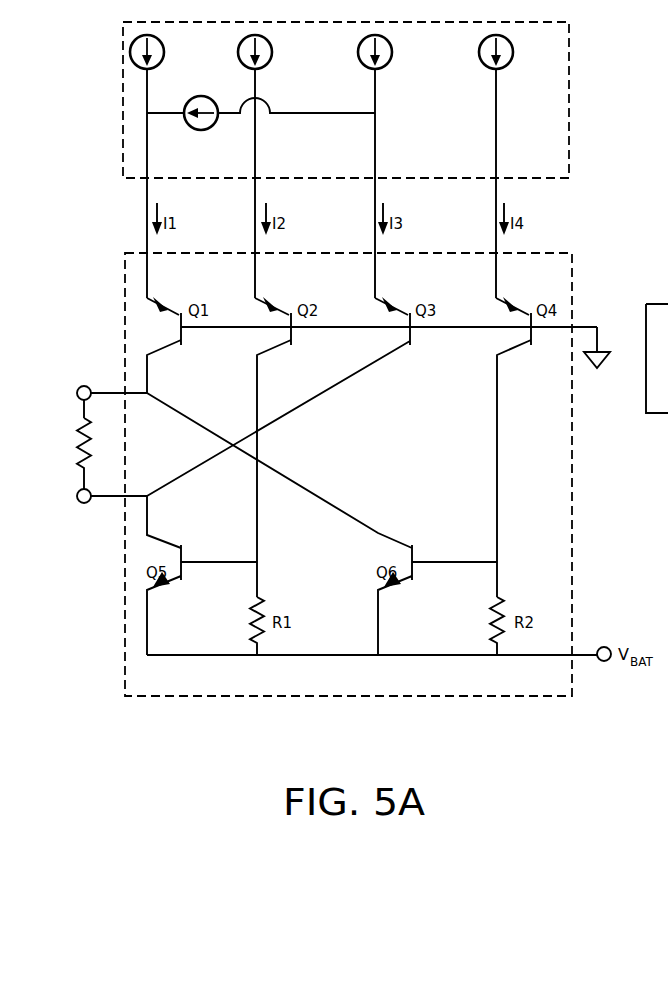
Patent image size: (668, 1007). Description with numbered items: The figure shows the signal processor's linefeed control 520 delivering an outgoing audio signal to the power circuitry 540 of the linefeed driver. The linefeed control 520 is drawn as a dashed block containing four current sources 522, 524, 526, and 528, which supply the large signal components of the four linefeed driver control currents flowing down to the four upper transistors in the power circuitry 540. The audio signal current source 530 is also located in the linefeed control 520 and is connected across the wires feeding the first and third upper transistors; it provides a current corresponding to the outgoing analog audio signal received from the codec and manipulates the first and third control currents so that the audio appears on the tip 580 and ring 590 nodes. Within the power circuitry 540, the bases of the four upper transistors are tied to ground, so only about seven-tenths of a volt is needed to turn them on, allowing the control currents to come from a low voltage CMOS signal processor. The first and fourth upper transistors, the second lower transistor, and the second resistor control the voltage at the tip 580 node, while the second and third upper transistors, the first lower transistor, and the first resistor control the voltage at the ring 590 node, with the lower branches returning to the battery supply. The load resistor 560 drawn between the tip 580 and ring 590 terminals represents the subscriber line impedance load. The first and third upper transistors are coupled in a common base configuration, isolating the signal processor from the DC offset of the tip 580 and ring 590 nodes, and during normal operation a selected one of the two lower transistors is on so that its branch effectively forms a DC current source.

The linefeed control 520 is at (122, 105).
The current source 522 is at (164, 52).
The current source 524 is at (272, 52).
The current source 526 is at (392, 52).
The current source 528 is at (513, 52).
The audio signal current source 530 is at (201, 106).
The power circuitry 540 is at (356, 697).
The resistor R_L 560 is at (67, 444).
The tip node 580 is at (80, 371).
The ring node 590 is at (81, 521).